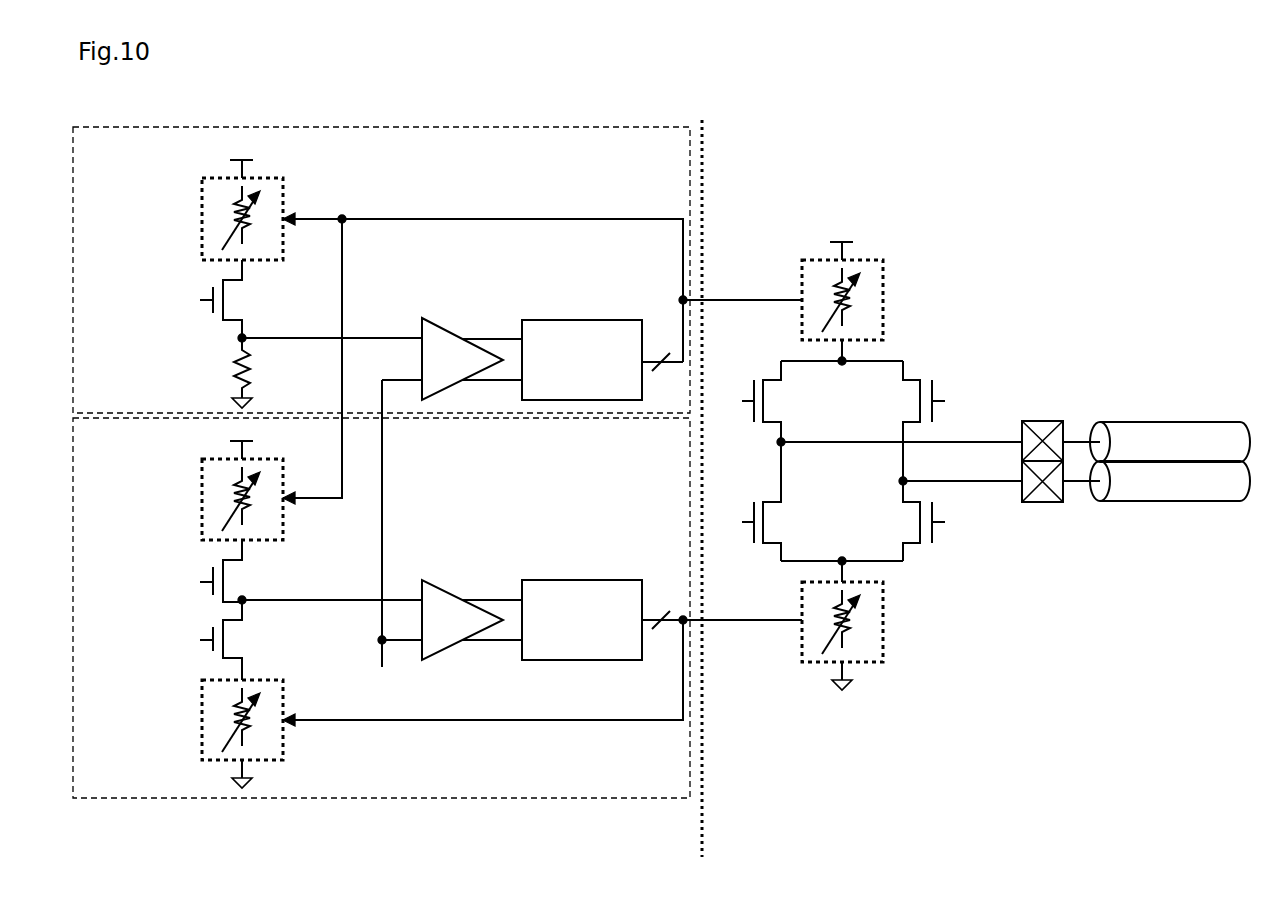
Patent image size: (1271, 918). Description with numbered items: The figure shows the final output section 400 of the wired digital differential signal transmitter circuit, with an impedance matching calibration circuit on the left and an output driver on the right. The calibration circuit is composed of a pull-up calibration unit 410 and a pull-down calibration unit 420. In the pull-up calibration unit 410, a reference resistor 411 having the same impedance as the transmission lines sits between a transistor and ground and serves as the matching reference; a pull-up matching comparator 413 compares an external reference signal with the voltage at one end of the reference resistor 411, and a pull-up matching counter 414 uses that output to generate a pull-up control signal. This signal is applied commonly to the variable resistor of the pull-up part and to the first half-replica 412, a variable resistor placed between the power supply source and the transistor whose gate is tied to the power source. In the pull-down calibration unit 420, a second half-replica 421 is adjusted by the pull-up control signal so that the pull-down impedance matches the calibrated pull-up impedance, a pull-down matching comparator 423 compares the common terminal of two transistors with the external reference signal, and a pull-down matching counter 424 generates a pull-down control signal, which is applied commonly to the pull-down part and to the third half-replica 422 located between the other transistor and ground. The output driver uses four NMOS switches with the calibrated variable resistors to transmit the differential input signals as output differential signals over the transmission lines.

The final output section 400 is at (1066, 103).
The pull-up calibration unit 410 is at (515, 127).
The reference resistor 411 is at (205, 370).
The first half-replica 412 is at (200, 226).
The pull-up matching comparator 413 is at (455, 332).
The pull-up matching counter 414 is at (550, 320).
The pull-down calibration unit 420 is at (625, 798).
The second half-replica 421 is at (200, 498).
The third half-replica 422 is at (200, 720).
The pull-down matching comparator 423 is at (455, 594).
The pull-down matching counter 424 is at (575, 580).